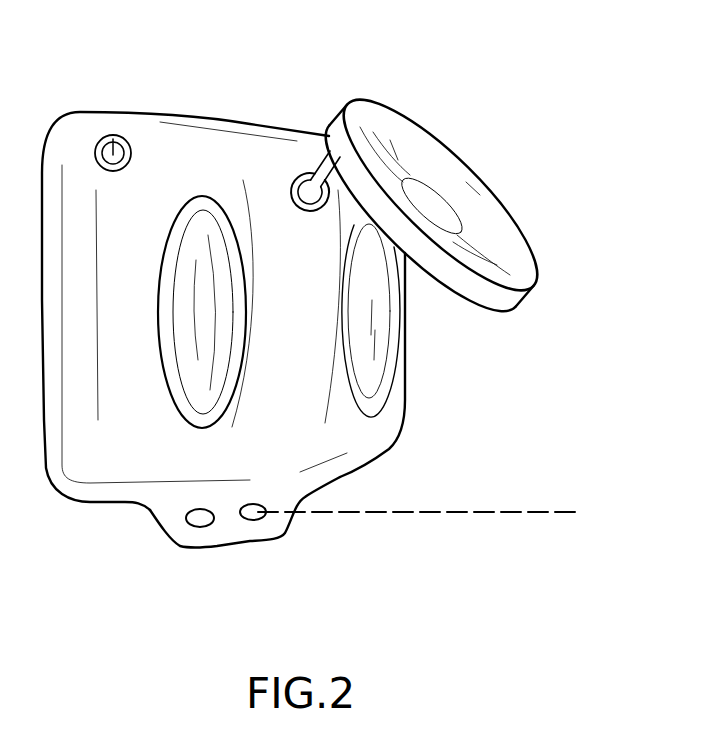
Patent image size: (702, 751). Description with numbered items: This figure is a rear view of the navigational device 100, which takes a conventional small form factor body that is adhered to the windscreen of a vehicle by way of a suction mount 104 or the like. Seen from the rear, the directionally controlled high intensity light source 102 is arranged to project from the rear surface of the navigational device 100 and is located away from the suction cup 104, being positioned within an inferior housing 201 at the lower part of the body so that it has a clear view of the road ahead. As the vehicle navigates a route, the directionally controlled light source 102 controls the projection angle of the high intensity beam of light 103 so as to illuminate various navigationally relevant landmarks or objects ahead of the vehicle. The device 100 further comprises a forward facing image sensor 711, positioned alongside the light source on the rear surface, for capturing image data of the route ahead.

The navigational device 100 is at (381, 86).
The suction mount 104 is at (473, 200).
The high intensity beam of light 103 is at (427, 512).
The inferior housing 201 is at (308, 503).
The forward facing image sensor 711 is at (200, 528).
The directionally controlled high intensity light source 102 is at (253, 521).